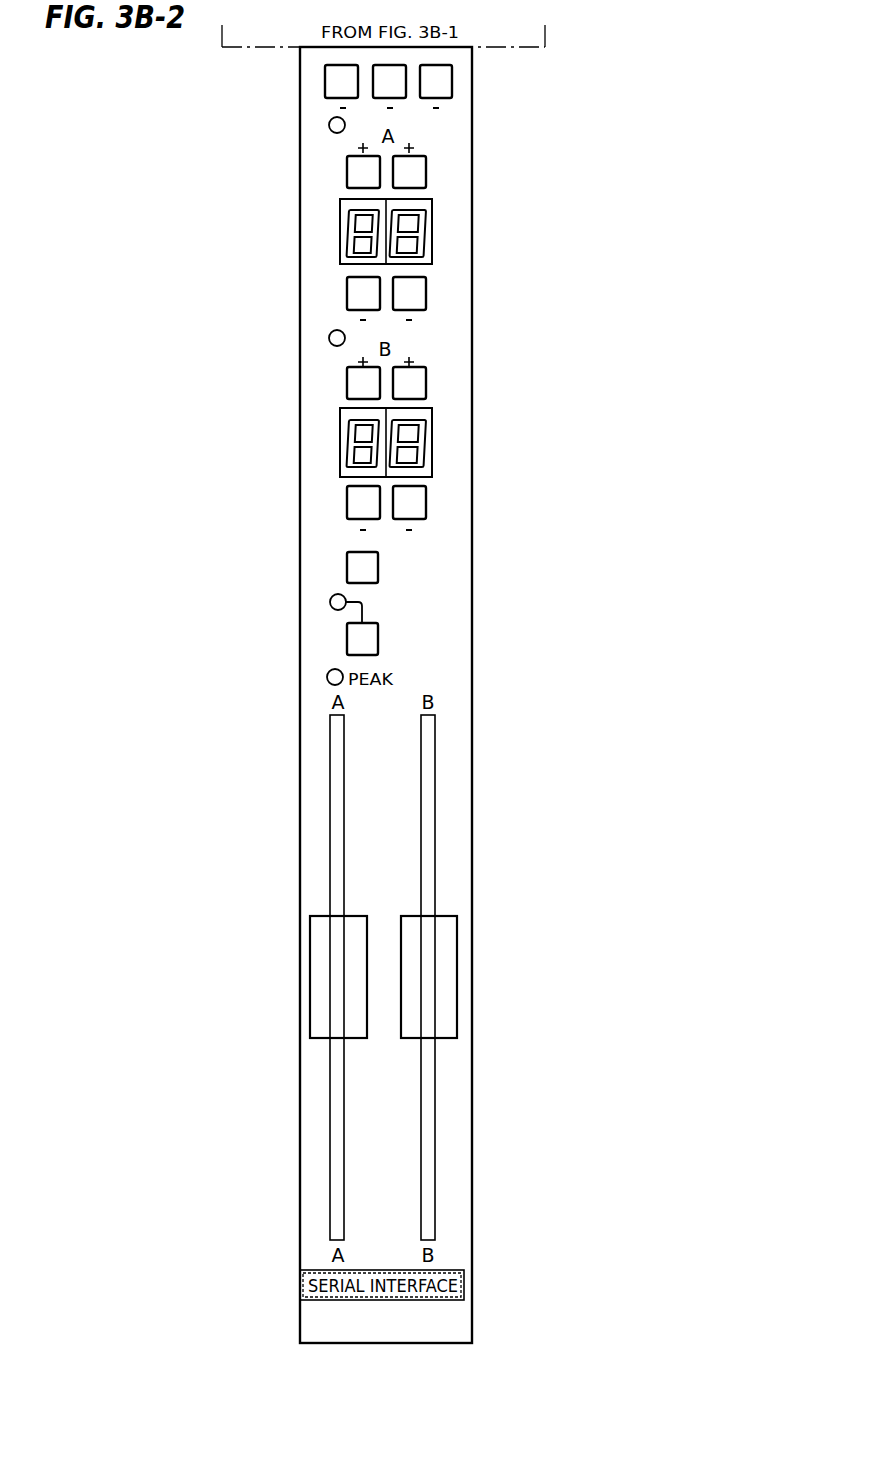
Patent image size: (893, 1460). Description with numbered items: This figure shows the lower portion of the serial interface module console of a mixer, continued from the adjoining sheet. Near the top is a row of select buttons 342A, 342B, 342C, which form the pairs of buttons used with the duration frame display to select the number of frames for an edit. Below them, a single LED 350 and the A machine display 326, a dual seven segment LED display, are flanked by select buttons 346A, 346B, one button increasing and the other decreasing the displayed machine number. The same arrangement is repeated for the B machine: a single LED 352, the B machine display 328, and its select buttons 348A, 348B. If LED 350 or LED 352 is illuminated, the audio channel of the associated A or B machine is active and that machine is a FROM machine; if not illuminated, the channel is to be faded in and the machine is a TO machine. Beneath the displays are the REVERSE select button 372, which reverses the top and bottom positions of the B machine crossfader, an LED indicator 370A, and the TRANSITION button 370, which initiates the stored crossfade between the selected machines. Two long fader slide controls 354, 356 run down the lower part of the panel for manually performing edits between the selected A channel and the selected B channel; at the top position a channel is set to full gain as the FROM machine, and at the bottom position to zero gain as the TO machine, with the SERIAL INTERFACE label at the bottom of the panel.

The select button 342A is at (325, 80).
The select button 342B is at (440, 80).
The select button 342C is at (387, 88).
The single LED 350 is at (329, 127).
The select button 346A is at (347, 287).
The select button 346B is at (426, 172).
The A machine display 326 is at (432, 235).
The single LED 352 is at (329, 338).
The select button 348A is at (347, 497).
The select button 348B is at (426, 383).
The B machine display 328 is at (432, 441).
The REVERSE select button 372 is at (347, 569).
The LED indicator 370A is at (330, 603).
The TRANSITION button 370 is at (347, 642).
The fader slide control 354 is at (335, 980).
The fader slide control 356 is at (433, 977).